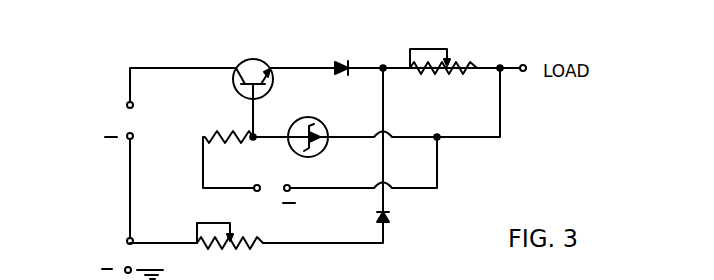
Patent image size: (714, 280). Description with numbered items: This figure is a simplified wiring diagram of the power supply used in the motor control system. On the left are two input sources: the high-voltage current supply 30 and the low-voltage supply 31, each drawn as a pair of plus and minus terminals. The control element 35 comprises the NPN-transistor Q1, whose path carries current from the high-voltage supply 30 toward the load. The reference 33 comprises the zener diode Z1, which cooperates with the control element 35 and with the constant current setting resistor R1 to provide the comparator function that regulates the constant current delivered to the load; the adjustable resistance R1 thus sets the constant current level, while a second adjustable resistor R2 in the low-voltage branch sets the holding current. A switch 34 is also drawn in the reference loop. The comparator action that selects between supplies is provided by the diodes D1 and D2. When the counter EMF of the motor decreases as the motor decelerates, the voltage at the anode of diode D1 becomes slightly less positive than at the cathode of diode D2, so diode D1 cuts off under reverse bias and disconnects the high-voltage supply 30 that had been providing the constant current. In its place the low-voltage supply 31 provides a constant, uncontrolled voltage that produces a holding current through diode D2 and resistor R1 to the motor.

The current supply 30 is at (118, 143).
The low-voltage supply 31 is at (125, 237).
The reference 33 is at (327, 133).
The switch terminals 34 is at (271, 188).
The control element 35 is at (269, 60).
The NPN-transistor Q1 is at (272, 74).
The diode D1 is at (362, 58).
The diode D2 is at (389, 217).
The adjustable resistance R1 is at (457, 63).
The adjustable resistor R2 is at (230, 247).
The zener diode Z1 is at (323, 152).